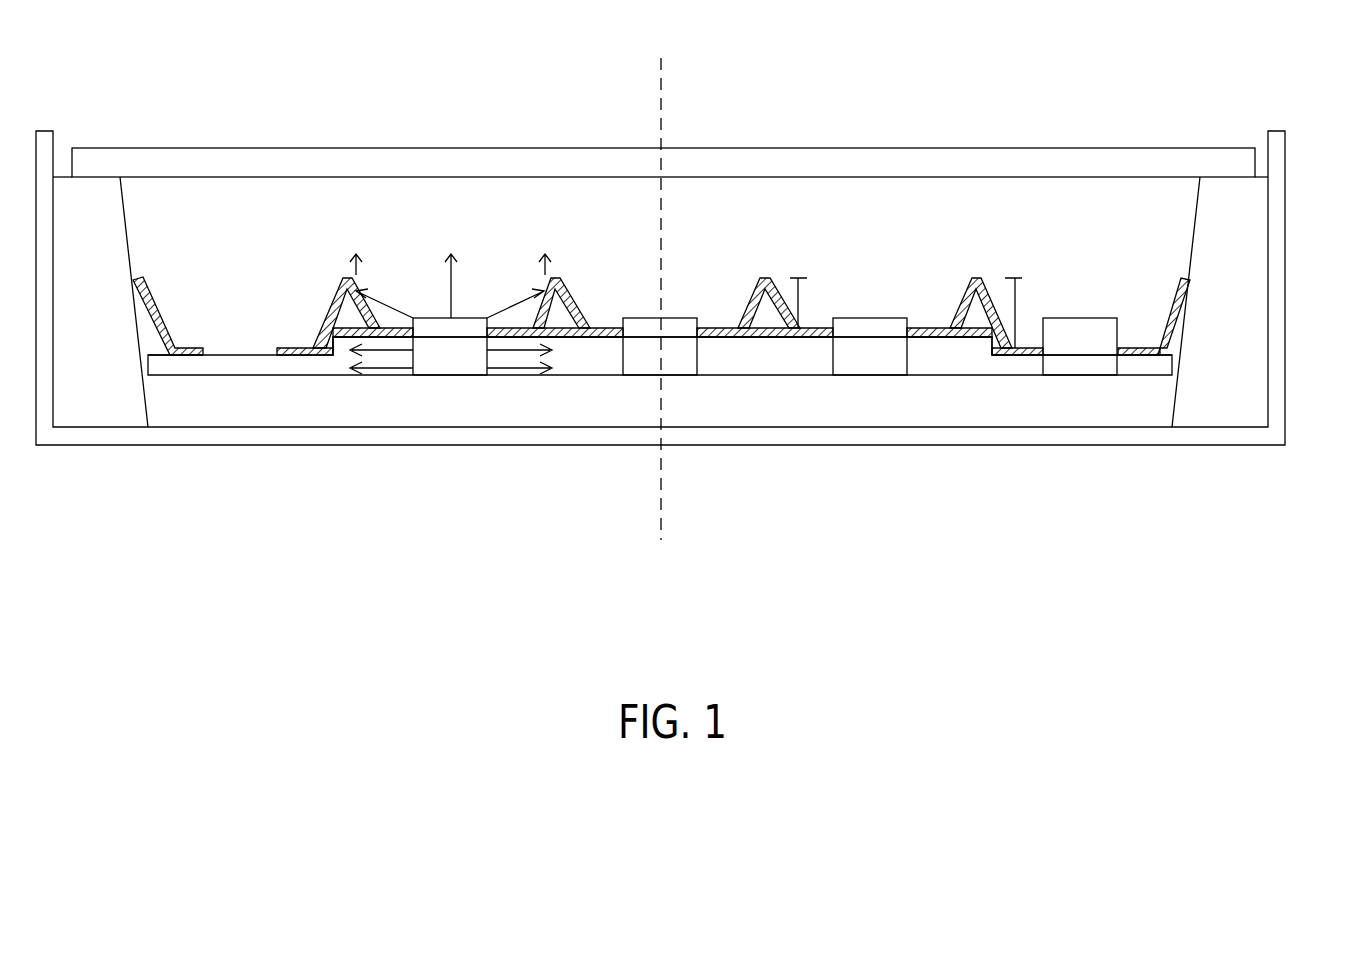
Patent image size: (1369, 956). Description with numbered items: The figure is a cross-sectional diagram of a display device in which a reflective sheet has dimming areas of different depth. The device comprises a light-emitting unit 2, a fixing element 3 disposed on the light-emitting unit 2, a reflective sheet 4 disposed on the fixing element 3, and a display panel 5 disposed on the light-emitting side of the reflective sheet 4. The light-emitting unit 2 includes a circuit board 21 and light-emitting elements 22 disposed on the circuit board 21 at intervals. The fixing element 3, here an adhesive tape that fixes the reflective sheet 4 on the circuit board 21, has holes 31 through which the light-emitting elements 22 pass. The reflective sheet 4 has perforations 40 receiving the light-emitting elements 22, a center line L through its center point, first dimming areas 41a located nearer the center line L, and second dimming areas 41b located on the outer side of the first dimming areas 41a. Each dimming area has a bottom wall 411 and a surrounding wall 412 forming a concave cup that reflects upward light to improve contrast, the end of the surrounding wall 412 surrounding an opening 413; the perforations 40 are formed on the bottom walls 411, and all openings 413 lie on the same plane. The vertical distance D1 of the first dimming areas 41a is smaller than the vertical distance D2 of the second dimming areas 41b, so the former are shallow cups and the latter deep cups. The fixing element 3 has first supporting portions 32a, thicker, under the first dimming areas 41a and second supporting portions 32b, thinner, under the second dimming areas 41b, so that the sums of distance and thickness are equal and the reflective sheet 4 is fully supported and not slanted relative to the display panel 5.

The light-emitting unit 2 is at (660, 472).
The circuit board 21 is at (753, 413).
The light-emitting elements 22 is at (690, 353).
The fixing element 3 is at (632, 446).
The holes 31 is at (207, 365).
The first supporting portions 32a is at (973, 368).
The second supporting portions 32b is at (1138, 365).
The reflective sheet 4 is at (751, 344).
The perforations 40 is at (203, 352).
The first dimming areas 41a is at (973, 258).
The second dimming areas 41b is at (1180, 258).
The bottom wall 411 is at (1027, 358).
The surrounding wall 412 is at (1172, 320).
The opening 413 is at (1172, 290).
The display panel 5 is at (135, 148).
The center line L is at (661, 92).
The vertical distance of first dimming area D1 is at (815, 303).
The vertical distance of second dimming area D2 is at (1030, 313).